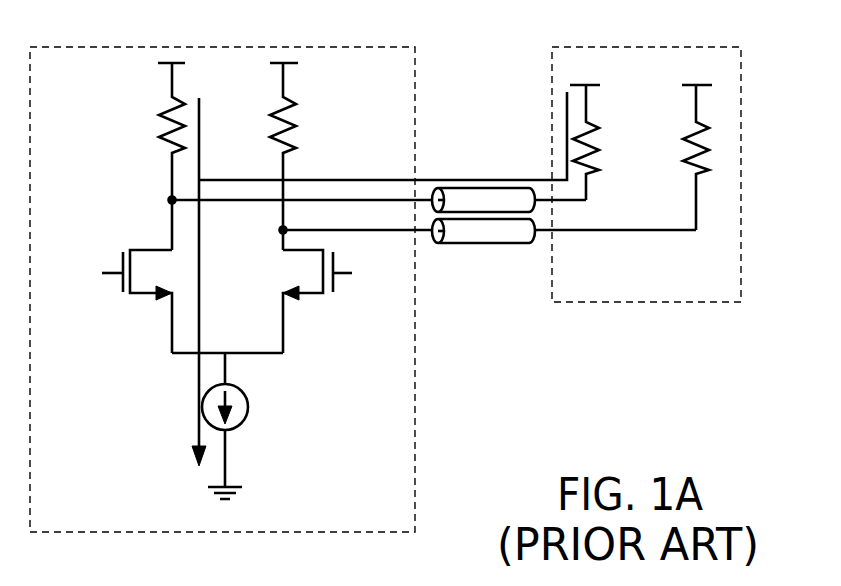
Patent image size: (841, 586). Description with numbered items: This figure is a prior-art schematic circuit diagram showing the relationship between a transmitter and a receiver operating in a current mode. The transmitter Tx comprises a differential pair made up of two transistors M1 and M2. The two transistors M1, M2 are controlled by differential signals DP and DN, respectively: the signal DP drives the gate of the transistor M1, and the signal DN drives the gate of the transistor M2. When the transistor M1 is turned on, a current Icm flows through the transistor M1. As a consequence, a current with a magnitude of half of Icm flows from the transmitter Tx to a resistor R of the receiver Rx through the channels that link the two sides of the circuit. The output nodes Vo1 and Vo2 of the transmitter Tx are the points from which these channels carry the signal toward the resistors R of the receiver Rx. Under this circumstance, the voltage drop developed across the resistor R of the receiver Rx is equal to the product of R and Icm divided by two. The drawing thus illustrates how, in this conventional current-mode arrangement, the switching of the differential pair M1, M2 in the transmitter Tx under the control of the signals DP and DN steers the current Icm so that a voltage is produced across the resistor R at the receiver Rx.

The transmitter Tx is at (222, 289).
The receiver Rx is at (646, 174).
The resistor R is at (422, 156).
The first output node Vo1 is at (352, 200).
The second output node Vo2 is at (461, 230).
The current Icm is at (379, 279).
The transistor M1 is at (153, 301).
The transistor M2 is at (298, 301).
The differential signal DP is at (91, 273).
The differential signal DN is at (363, 273).